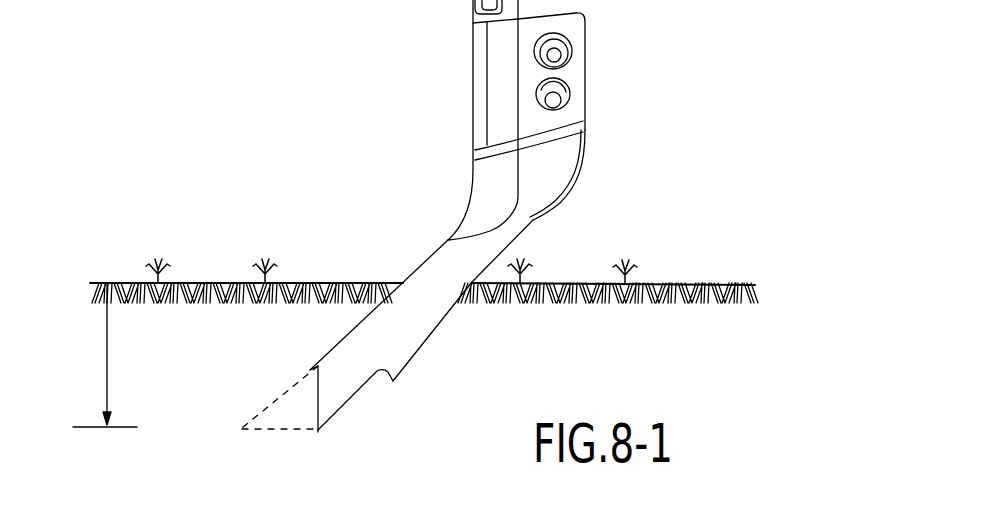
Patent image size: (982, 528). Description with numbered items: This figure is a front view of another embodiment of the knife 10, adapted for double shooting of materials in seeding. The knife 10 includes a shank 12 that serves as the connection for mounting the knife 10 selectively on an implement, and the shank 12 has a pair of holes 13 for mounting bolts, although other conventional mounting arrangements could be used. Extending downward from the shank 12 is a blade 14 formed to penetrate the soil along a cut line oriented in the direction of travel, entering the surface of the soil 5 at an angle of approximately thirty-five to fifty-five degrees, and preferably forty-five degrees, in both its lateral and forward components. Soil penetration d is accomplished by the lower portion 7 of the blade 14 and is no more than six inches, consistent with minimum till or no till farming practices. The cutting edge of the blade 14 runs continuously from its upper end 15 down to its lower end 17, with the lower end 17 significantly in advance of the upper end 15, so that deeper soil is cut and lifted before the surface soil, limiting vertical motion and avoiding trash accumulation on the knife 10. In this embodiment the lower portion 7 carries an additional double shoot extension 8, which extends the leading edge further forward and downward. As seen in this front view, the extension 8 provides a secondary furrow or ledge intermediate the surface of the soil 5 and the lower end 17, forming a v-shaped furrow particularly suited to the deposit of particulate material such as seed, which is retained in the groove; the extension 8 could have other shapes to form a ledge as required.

The surface of the soil 5 is at (697, 284).
The lower portion 7 is at (470, 337).
The double shoot extension 8 is at (407, 373).
The knife 10 is at (580, 190).
The shank 12 is at (585, 110).
The holes 13 is at (562, 54).
The blade 14 is at (457, 200).
The upper end of the cutting edge 15 is at (537, 227).
The lower end of the cutting edge 17 is at (318, 432).
The soil penetration d is at (107, 357).